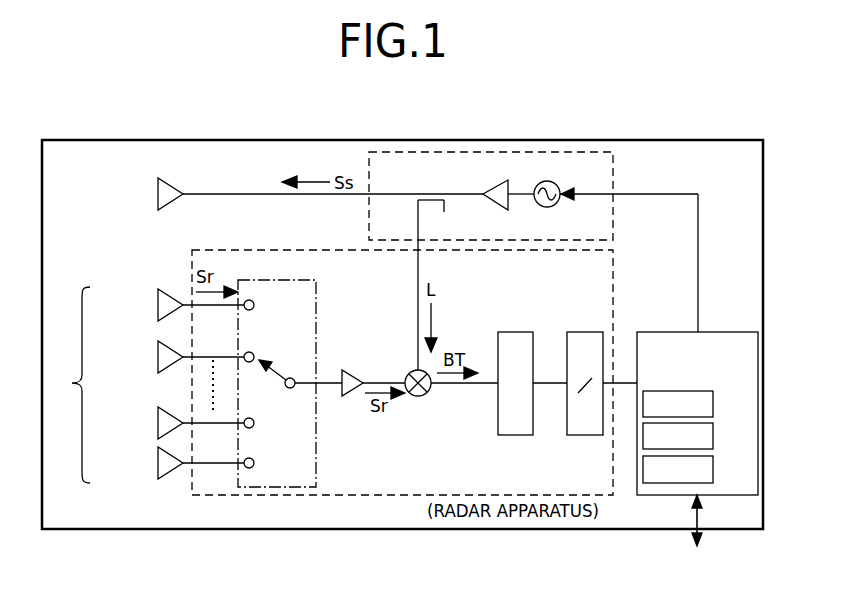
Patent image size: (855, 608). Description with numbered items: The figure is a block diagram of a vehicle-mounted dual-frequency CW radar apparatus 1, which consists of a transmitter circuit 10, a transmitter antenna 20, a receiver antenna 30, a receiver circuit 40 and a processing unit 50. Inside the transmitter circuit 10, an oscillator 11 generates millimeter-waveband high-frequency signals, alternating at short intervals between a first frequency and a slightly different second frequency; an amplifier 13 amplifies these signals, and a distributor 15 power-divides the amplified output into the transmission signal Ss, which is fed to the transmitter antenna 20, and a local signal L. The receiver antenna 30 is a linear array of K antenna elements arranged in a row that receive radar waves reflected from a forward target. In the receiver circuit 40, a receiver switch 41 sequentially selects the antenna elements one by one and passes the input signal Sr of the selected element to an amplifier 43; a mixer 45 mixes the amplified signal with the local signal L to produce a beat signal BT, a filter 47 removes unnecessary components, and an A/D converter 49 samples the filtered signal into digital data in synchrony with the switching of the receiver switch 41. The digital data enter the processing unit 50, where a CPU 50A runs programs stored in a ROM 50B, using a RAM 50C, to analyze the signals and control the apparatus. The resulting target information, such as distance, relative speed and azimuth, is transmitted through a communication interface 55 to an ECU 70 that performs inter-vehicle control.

The radar apparatus 1 is at (697, 132).
The transmitter circuit 10 is at (613, 176).
The oscillator 11 is at (556, 204).
The amplifier 13 is at (491, 186).
The distributor 15 is at (415, 201).
The transmitter antenna 20 is at (183, 181).
The receiver antenna 30 is at (147, 385).
The receiver circuit 40 is at (265, 250).
The receiver switch 41 is at (316, 313).
The amplifier 43 is at (353, 373).
The mixer 45 is at (428, 393).
The filter 47 is at (514, 436).
The A/D converter 49 is at (582, 436).
The processing unit 50 is at (668, 332).
The CPU 50A is at (714, 402).
The ROM 50B is at (714, 437).
The RAM 50C is at (735, 458).
The communication interface 55 is at (695, 517).
The ECU 70 is at (696, 580).